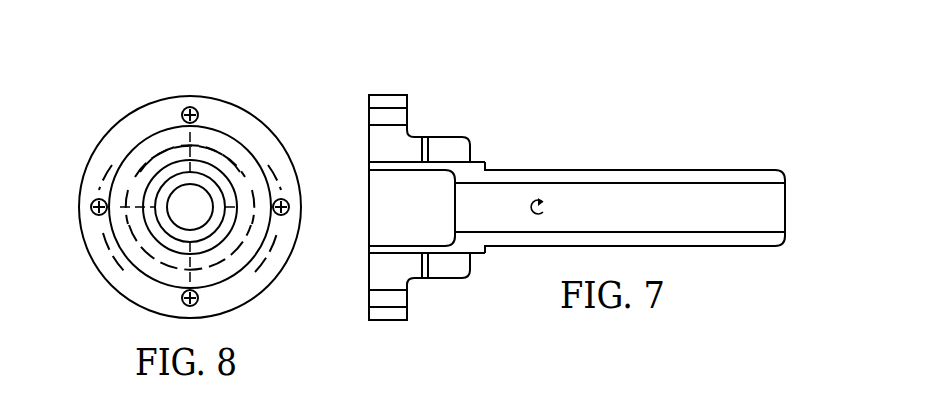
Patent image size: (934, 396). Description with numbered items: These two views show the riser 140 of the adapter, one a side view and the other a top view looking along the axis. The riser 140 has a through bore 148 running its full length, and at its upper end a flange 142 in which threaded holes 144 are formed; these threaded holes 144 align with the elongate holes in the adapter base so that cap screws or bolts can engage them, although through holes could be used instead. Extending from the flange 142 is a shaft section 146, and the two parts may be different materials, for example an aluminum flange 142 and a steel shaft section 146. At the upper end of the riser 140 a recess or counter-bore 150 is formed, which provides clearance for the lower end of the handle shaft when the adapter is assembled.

In FIG. 7, the riser 140 is at (585, 202).
In FIG. 7, the flange 142 is at (397, 95).
In FIG. 8, the threaded holes 144 is at (184, 298).
In FIG. 7, the threaded holes 144 is at (380, 304).
In FIG. 7, the shaft section 146 is at (703, 169).
In FIG. 8, the through bore 148 is at (192, 212).
In FIG. 7, the through bore 148 is at (748, 211).
In FIG. 7, the counter-bore 150 is at (410, 205).